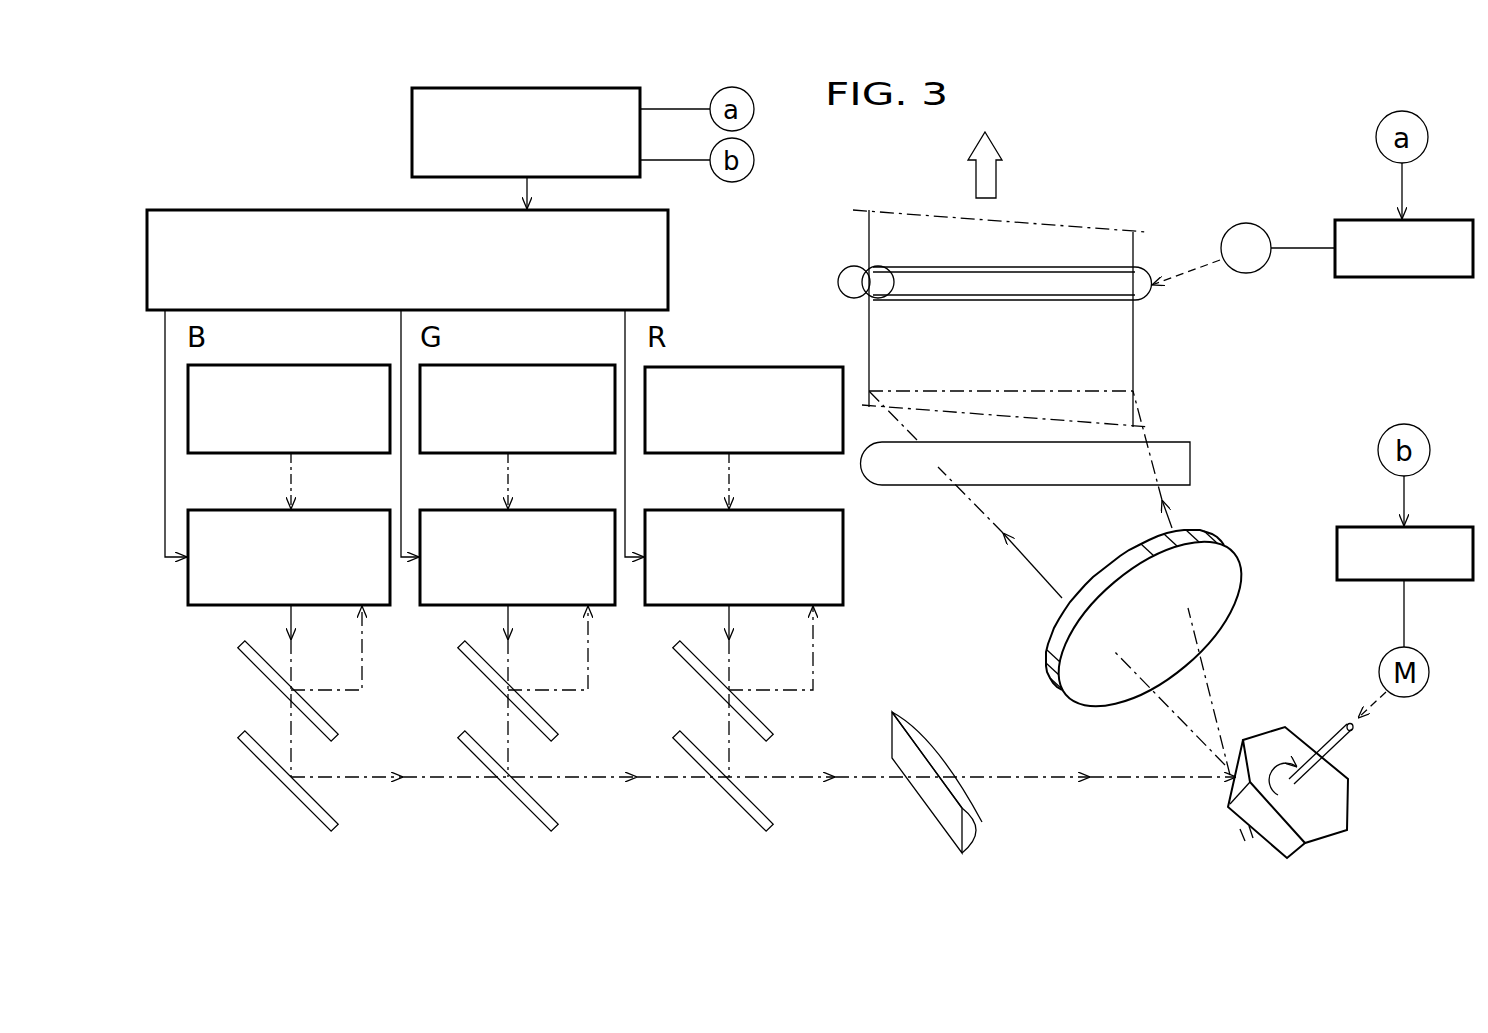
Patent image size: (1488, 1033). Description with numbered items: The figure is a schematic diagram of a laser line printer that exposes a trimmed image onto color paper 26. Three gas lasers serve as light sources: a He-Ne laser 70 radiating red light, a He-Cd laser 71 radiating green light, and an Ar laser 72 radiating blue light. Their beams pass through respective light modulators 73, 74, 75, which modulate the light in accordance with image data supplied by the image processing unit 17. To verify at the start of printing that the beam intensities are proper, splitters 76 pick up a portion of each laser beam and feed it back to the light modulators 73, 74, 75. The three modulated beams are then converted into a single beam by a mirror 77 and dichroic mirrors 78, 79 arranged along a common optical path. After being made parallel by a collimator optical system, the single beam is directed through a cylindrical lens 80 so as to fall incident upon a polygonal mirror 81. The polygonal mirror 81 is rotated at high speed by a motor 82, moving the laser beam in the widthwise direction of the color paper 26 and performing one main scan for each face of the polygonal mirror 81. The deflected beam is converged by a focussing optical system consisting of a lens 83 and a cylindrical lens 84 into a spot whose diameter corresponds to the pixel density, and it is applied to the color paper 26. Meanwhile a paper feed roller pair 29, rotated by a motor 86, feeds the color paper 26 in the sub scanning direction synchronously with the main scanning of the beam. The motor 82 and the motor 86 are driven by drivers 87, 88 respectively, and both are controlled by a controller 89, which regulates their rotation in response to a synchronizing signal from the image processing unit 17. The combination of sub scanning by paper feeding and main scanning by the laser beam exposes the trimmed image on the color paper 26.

The image processing unit 17 is at (267, 210).
The controller 89 is at (412, 130).
The Ar laser 72 is at (295, 365).
The He-Cd laser 71 is at (520, 365).
The He-Ne laser 70 is at (735, 367).
The light modulator 75 is at (318, 510).
The light modulator 74 is at (541, 510).
The light modulator 73 is at (765, 510).
The splitter 76 is at (335, 728).
The mirror 77 is at (335, 820).
The dichroic mirror 78 is at (555, 820).
The dichroic mirror 79 is at (770, 820).
The cylindrical lens 80 is at (908, 748).
The polygonal mirror 81 is at (1288, 742).
The motor 82 is at (1404, 697).
The lens 83 is at (1225, 617).
The cylindrical lens 84 is at (1188, 463).
The motor 86 is at (1247, 226).
The driver 87 is at (1337, 550).
The driver 88 is at (1407, 278).
The paper feed roller pair 29 is at (1063, 280).
The color paper 26 is at (1120, 352).